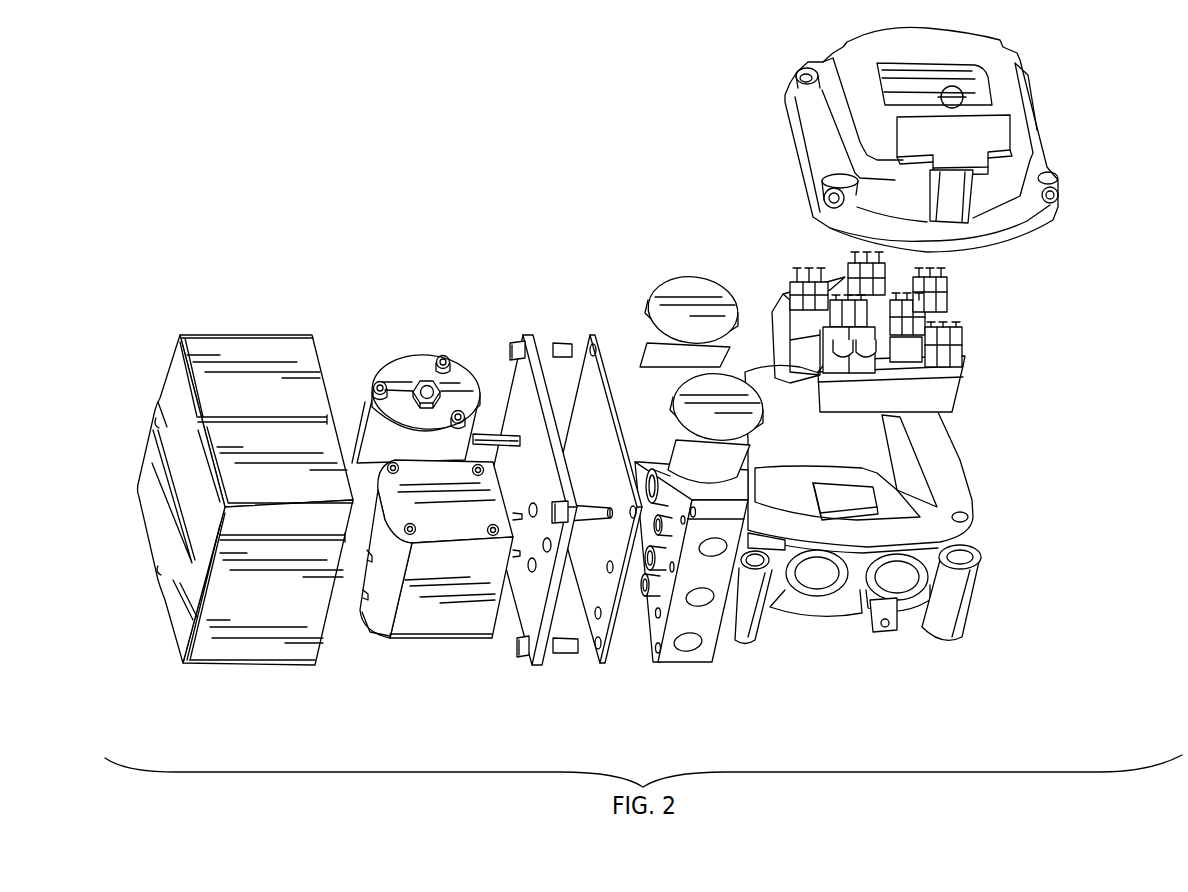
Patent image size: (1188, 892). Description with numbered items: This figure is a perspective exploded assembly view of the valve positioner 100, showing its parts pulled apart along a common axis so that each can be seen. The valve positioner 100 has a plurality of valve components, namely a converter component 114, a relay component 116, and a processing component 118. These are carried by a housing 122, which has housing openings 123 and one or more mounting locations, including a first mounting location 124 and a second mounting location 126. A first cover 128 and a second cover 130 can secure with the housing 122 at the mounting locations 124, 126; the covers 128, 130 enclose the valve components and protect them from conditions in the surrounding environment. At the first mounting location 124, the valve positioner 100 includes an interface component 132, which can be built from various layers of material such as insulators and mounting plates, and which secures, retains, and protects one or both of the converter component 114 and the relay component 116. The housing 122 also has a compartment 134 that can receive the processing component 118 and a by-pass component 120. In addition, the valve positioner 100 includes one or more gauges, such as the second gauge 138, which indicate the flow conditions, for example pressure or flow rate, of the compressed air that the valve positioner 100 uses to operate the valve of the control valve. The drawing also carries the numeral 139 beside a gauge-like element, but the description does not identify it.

The valve positioner 100 is at (295, 128).
The converter component 114 is at (402, 342).
The relay component 116 is at (466, 656).
The processing component 118 is at (985, 333).
The by-pass component 120 is at (873, 503).
The housing 122 is at (862, 544).
The housing openings 123 is at (642, 448).
The first mounting location 124 is at (665, 512).
The second mounting location 126 is at (997, 589).
The first cover 128 is at (255, 678).
The second cover 130 is at (1081, 118).
The interface component 132 is at (627, 670).
The compartment 134 is at (910, 467).
The second gauge 138 is at (655, 272).
The piston 139 is at (668, 360).